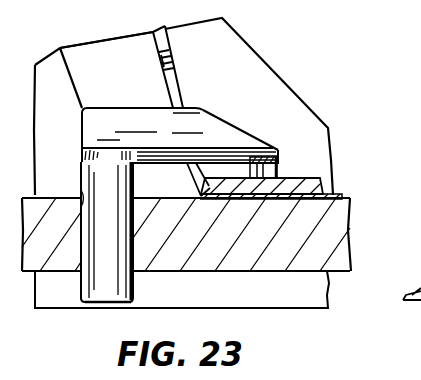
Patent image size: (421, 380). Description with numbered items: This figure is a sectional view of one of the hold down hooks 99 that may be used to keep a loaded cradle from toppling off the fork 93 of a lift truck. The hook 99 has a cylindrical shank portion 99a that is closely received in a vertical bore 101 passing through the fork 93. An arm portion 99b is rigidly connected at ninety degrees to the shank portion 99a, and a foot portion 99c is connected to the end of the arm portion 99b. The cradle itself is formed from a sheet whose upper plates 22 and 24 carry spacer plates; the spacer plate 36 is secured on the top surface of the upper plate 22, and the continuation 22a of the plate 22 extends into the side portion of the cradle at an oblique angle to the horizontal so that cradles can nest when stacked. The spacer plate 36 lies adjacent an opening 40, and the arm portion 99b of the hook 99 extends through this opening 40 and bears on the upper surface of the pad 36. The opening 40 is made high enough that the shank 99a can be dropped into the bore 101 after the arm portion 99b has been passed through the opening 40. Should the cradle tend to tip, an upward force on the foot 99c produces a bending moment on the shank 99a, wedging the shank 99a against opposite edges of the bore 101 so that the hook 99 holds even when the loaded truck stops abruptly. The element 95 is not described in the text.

The upper plate 22 is at (333, 193).
The continuation of upper plate 22a is at (106, 24).
The upper plate 24 is at (290, 30).
The spacer plate 36 is at (291, 183).
The opening 40 is at (177, 78).
The fork 93 is at (328, 222).
The housing 95 is at (193, 97).
The hold down hook 99 is at (99, 129).
The cylindrical shank portion 99a is at (93, 283).
The arm portion 99b is at (227, 121).
The foot portion 99c is at (263, 168).
The vertical bore 101 is at (83, 193).